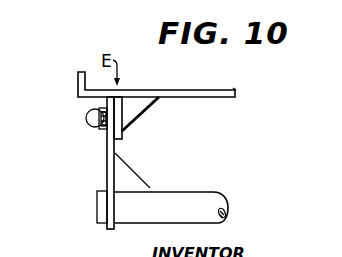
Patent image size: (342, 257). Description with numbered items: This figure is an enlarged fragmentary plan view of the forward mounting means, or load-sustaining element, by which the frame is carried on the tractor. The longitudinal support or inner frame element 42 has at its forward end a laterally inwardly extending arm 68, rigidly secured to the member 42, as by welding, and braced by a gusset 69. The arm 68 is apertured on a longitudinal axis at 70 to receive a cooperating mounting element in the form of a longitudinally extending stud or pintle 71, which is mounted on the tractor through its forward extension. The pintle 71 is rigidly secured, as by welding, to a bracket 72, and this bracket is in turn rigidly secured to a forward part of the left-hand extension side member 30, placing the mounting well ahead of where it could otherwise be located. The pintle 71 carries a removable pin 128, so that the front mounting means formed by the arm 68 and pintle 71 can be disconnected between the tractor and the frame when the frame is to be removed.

The side member 30 is at (165, 98).
The inner frame element 42 is at (174, 196).
The arm 68 is at (106, 177).
The gusset 69 is at (129, 176).
The aperture 70 is at (98, 110).
The pintle 71 is at (89, 119).
The bracket 72 is at (124, 108).
The removable pin 128 is at (93, 126).